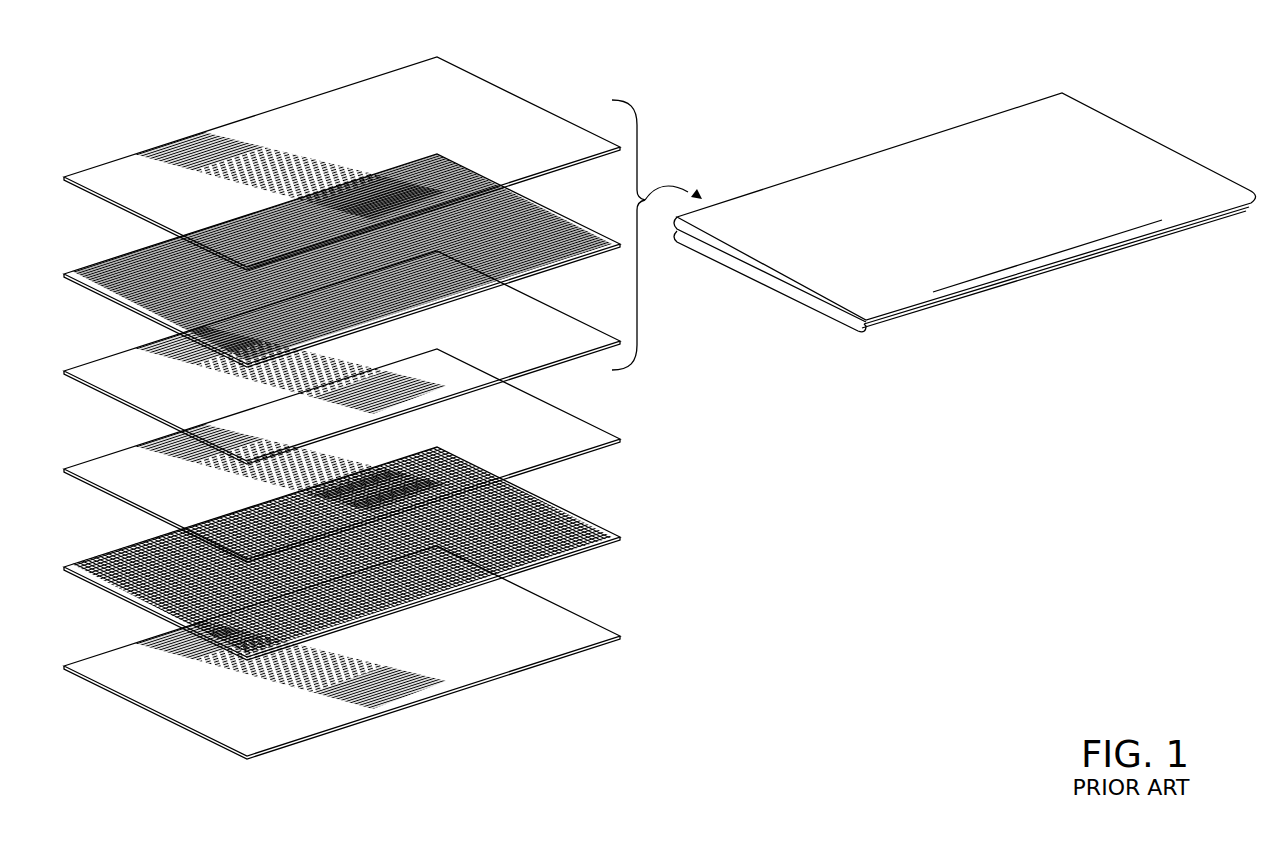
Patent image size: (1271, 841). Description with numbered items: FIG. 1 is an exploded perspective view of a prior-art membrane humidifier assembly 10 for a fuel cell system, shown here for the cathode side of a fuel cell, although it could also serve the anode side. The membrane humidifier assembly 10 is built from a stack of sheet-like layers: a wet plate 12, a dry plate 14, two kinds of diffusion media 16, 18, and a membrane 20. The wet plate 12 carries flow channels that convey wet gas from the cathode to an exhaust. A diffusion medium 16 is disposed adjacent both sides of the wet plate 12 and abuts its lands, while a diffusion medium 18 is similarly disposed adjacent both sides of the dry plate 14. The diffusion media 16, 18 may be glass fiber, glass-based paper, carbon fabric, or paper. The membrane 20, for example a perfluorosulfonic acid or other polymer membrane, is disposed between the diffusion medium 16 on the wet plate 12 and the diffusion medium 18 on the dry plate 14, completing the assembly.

The membrane humidifier assembly 10 is at (124, 85).
The wet plate 12 is at (334, 287).
The dry plate 14 is at (337, 580).
The diffusion medium 16 is at (332, 155).
The diffusion medium 18 is at (390, 454).
The membrane 20 is at (938, 219).